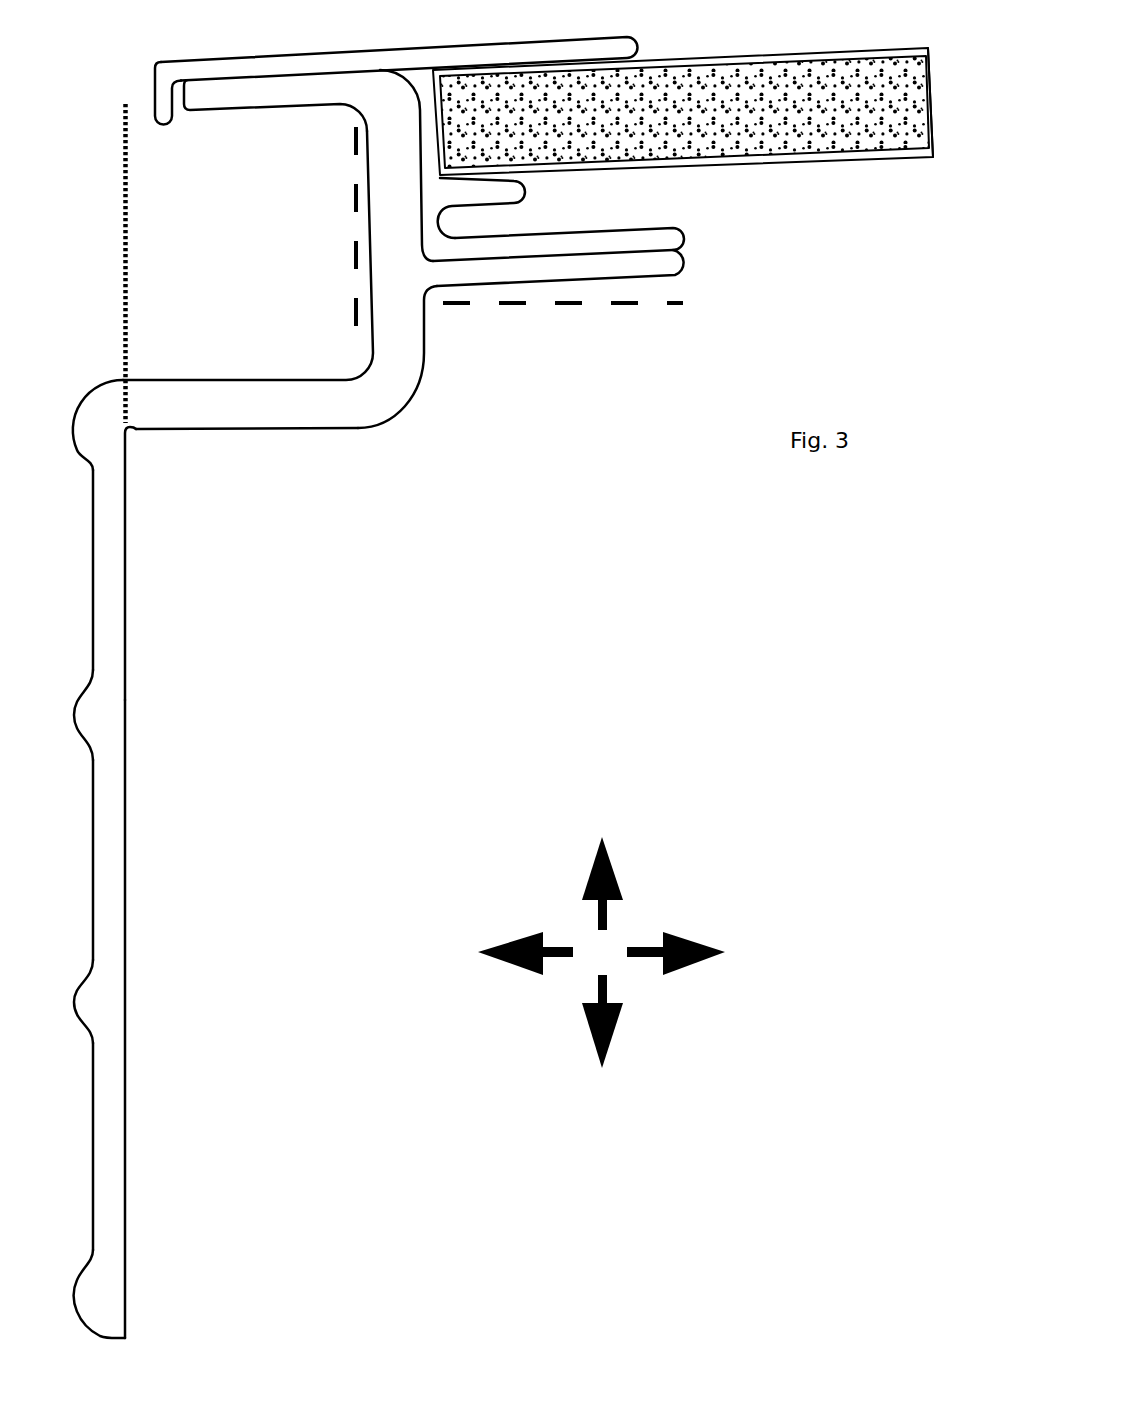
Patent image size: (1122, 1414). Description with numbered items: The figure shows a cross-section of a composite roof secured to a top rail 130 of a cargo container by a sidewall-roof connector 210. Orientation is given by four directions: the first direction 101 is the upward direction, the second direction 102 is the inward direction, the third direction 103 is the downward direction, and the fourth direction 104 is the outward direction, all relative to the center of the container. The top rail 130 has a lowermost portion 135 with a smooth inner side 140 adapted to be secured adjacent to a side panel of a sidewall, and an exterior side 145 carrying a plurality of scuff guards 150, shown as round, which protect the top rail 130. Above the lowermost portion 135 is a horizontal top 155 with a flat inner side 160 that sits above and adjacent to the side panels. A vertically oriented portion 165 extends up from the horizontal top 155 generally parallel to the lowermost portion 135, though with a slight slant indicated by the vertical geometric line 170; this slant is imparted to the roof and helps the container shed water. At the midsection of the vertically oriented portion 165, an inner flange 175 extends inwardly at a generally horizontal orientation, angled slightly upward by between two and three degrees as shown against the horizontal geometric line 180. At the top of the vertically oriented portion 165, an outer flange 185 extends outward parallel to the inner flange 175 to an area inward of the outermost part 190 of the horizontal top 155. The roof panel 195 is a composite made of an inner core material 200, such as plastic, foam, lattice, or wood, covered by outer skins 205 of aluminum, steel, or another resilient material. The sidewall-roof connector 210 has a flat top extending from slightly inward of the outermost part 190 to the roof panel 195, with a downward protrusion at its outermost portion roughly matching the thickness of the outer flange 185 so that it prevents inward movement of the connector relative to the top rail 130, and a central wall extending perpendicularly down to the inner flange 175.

The first direction 101 is at (607, 918).
The second direction 102 is at (638, 957).
The third direction 103 is at (598, 992).
The fourth direction 104 is at (565, 950).
The top rail 130 is at (150, 636).
The lowermost portion 135 is at (108, 735).
The smooth inner side 140 is at (125, 880).
The exterior side 145 is at (95, 843).
The scuff guards 150 is at (78, 455).
The horizontal top 155 is at (260, 402).
The flat inner side 160 is at (263, 430).
The vertically oriented portion 165 is at (390, 297).
The vertical geometric line 170 is at (355, 245).
The inner flange 175 is at (655, 268).
The horizontal geometric line 180 is at (572, 305).
The outer flange 185 is at (273, 87).
The outermost part 190 is at (127, 403).
The roof panel 195 is at (862, 187).
The inner core material 200 is at (752, 115).
The outer skins 205 is at (657, 67).
The sidewall-roof connector 210 is at (148, 51).